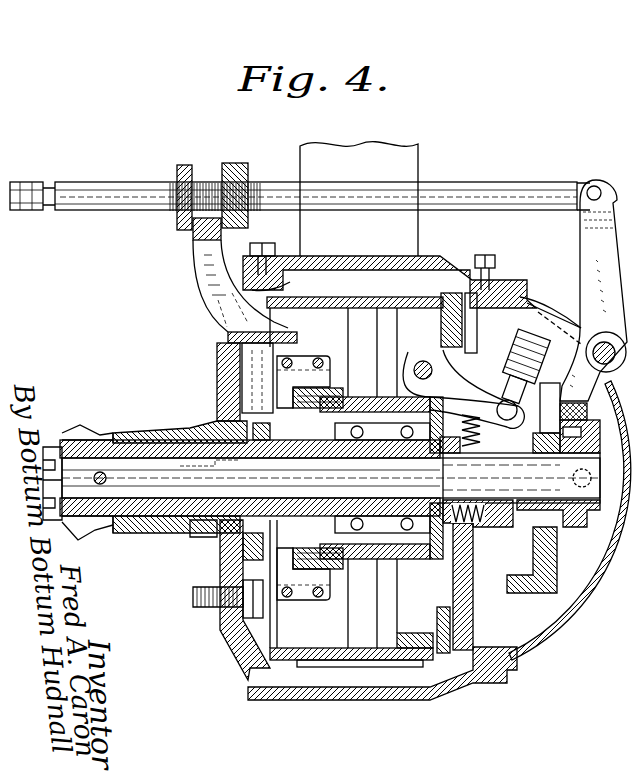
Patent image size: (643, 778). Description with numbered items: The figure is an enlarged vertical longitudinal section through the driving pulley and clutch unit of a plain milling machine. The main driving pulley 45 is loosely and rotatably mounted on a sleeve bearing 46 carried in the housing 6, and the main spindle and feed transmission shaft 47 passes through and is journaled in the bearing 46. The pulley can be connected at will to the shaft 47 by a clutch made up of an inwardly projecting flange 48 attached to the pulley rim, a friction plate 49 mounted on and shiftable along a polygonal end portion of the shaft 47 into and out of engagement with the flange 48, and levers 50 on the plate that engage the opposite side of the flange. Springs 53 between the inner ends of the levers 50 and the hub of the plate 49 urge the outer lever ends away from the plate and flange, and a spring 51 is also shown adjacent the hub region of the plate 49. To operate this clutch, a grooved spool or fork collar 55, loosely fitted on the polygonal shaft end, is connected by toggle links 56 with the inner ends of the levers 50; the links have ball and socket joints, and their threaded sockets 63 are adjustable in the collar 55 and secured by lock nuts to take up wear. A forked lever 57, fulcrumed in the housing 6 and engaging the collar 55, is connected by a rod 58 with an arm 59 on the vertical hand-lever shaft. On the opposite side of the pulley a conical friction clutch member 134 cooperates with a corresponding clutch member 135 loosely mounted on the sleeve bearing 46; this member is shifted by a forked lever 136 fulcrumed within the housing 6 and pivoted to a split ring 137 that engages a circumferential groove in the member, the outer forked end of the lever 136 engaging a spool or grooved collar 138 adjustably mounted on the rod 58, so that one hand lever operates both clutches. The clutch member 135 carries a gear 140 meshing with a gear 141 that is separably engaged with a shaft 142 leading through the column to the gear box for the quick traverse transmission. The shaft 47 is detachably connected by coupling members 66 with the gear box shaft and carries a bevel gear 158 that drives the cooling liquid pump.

The housing 6 is at (445, 262).
The main driving pulley 45 is at (364, 297).
The sleeve bearing 46 is at (330, 486).
The shaft 47 is at (491, 455).
The inwardly projecting flange 48 is at (462, 330).
The friction plate 49 is at (470, 612).
The levers 50 is at (473, 368).
The spring 51 is at (478, 522).
The springs 53 is at (500, 428).
The spool or fork collar 55 is at (557, 530).
The toggle links 56 is at (505, 388).
The forked lever 57 is at (584, 245).
The rod 58 is at (316, 185).
The arm 59 is at (34, 182).
The sockets 63 is at (545, 320).
The coupling members 66 is at (52, 446).
The conical friction clutch member 134 is at (316, 588).
The clutch member 135 is at (337, 365).
The forked lever 136 is at (202, 303).
The split ring 137 is at (217, 375).
The spool or grooved collar 138 is at (202, 168).
The gear 140 is at (222, 416).
The gear 141 is at (230, 568).
The shaft 142 is at (57, 527).
The bevel gear 158 is at (80, 530).